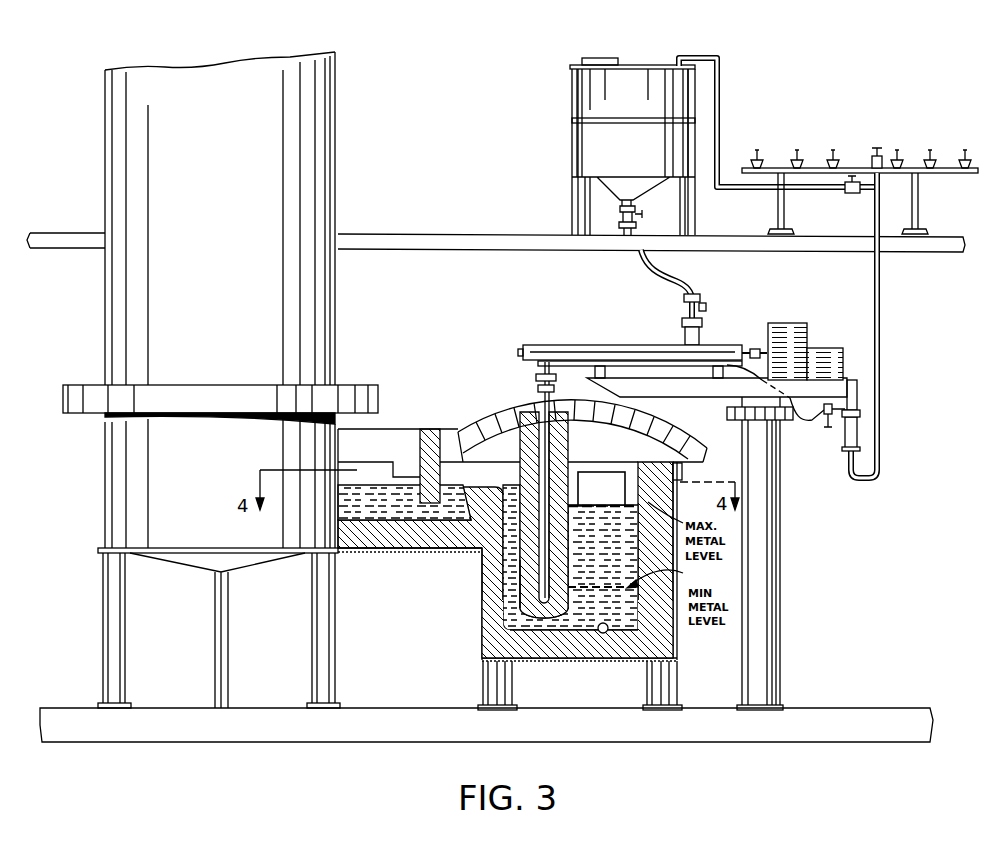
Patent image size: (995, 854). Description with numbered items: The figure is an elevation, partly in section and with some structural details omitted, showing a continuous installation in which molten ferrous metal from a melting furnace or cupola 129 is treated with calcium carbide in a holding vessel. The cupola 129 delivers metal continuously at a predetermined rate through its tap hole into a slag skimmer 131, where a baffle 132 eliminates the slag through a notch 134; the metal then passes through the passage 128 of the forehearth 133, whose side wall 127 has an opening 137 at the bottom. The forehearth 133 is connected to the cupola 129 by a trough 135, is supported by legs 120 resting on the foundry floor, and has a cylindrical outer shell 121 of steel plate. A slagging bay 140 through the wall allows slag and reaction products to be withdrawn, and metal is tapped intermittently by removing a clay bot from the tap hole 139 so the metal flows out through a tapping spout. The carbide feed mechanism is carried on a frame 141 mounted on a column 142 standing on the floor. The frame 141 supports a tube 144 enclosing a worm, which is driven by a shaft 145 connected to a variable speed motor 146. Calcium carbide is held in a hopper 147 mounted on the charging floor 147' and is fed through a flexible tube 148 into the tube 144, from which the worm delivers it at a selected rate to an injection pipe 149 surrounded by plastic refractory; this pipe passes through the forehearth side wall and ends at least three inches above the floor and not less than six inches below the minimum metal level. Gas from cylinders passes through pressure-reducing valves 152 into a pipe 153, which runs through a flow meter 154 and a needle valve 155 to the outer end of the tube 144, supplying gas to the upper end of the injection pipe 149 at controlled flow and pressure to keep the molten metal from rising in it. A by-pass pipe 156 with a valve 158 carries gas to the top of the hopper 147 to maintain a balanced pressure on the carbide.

The legs 120 is at (669, 694).
The outer shell 121 is at (679, 648).
The side wall 127 is at (522, 594).
The passage 128 is at (509, 579).
The cupola 129 is at (113, 311).
The slag skimmer 131 is at (412, 513).
The baffle 132 is at (440, 460).
The forehearth 133 is at (562, 641).
The notch 134 is at (398, 470).
The trough 135 is at (366, 553).
The opening 137 is at (521, 628).
The tap hole 139 is at (605, 636).
The slagging bay 140 is at (610, 478).
The frame 141 is at (677, 393).
The column 142 is at (768, 624).
The tube 144 is at (585, 345).
The shaft 145 is at (746, 347).
The variable speed motor 146 is at (806, 331).
The hopper 147 is at (601, 146).
The charging floor 147' is at (496, 227).
The flexible tube 148 is at (699, 292).
The injection pipe 149 is at (540, 410).
The pressure-reducing valves 152 is at (878, 157).
The pipe 153 is at (881, 354).
The flow meter 154 is at (859, 440).
The needle valve 155 is at (830, 428).
The by-pass pipe 156 is at (724, 117).
The valve 158 is at (857, 196).